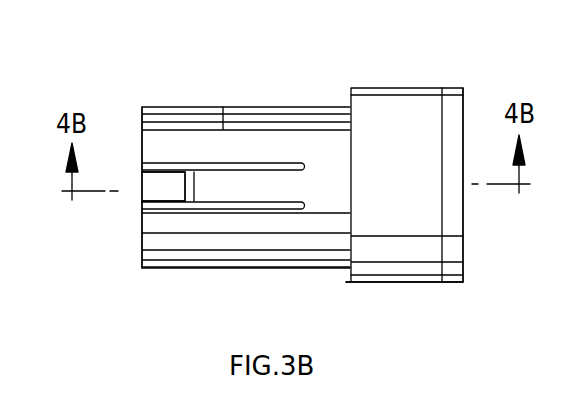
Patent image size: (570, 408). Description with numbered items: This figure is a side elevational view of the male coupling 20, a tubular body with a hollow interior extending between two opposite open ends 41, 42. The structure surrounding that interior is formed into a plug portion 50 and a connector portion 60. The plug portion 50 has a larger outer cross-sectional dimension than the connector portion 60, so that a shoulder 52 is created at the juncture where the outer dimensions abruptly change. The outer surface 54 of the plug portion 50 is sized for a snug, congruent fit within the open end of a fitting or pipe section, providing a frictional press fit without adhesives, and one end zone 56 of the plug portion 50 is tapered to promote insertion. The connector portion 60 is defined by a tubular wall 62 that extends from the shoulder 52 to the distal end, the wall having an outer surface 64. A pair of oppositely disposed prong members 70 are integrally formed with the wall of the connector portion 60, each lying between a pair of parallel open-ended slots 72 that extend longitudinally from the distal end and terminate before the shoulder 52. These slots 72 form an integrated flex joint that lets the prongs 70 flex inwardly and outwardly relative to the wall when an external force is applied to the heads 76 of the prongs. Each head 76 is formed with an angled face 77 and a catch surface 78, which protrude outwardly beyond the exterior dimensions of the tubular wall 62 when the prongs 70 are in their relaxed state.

The male coupling 20 is at (293, 100).
The open end 41 is at (463, 225).
The open end 42 is at (142, 240).
The plug portion 50 is at (401, 88).
The shoulder 52 is at (349, 92).
The outer surface 54 is at (410, 284).
The end zone 56 is at (455, 88).
The connector portion 60 is at (223, 122).
The tubular wall 62 is at (230, 268).
The outer surface 64 is at (182, 137).
The prong members 70 is at (217, 190).
The slots 72 is at (228, 166).
The heads 76 is at (165, 182).
The angled face 77 is at (157, 195).
The catch surface 78 is at (190, 188).